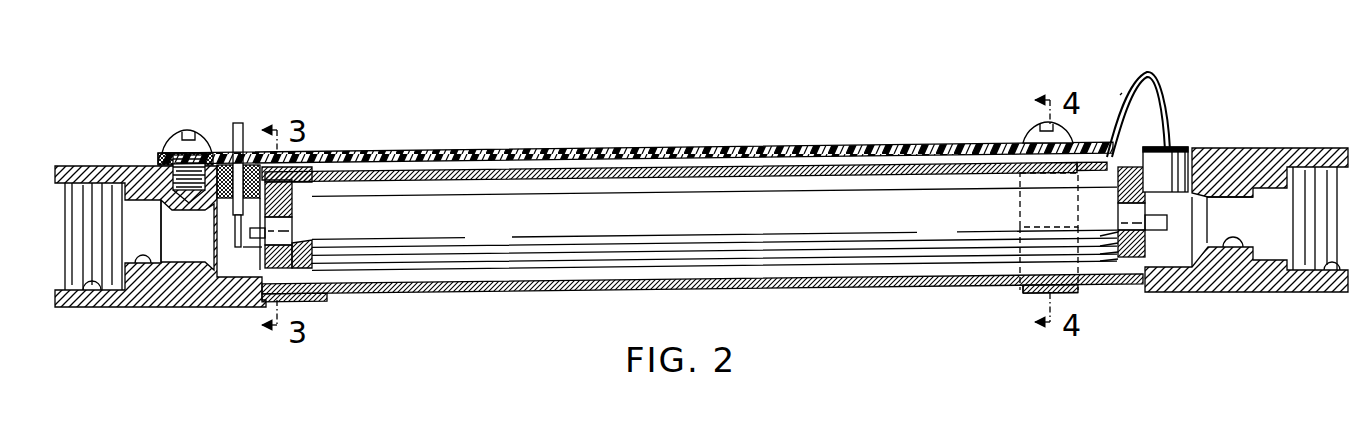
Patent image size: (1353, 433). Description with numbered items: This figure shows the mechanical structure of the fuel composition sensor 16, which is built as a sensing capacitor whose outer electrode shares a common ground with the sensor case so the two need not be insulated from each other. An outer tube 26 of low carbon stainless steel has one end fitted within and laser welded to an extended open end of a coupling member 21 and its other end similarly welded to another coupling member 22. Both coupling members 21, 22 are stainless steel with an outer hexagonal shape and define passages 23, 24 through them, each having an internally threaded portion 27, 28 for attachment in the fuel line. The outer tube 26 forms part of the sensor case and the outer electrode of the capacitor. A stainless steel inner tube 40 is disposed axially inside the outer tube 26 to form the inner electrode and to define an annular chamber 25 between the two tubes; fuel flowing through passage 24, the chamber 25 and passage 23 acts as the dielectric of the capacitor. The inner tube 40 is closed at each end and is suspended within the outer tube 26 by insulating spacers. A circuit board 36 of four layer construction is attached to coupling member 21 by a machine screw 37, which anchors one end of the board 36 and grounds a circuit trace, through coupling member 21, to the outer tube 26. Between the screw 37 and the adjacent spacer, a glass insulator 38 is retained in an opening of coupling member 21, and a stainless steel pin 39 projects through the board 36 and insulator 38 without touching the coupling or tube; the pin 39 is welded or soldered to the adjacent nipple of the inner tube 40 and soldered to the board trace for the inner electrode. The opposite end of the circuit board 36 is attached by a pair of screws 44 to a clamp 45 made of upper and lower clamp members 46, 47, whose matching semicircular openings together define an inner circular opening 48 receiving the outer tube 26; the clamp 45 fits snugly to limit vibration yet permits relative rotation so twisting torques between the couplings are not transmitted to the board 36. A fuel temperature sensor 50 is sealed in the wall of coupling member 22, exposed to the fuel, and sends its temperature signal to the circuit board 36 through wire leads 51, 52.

The sensor 16 is at (857, 122).
The coupling member 21 is at (123, 152).
The coupling member 22 is at (1268, 140).
The passage 23 is at (143, 268).
The passage 24 is at (1248, 291).
The annular chamber 25 is at (785, 270).
The outer tube 26 is at (505, 168).
The internally threaded portion 27 is at (92, 293).
The internally threaded portion 28 is at (1332, 295).
The circuit board 36 is at (655, 147).
The machine screw 37 is at (203, 137).
The glass insulator 38 is at (221, 194).
The stainless steel pin 39 is at (244, 122).
The inner tube 40 is at (518, 292).
The screws 44 is at (1019, 130).
The clamp 45 is at (1020, 297).
The upper clamp member 46 is at (1012, 153).
The lower clamp member 47 is at (1018, 305).
The inner circular opening 48 is at (1012, 280).
The fuel temperature sensor 50 is at (1168, 147).
The wire lead 51 is at (1118, 95).
The wire lead 52 is at (1143, 70).